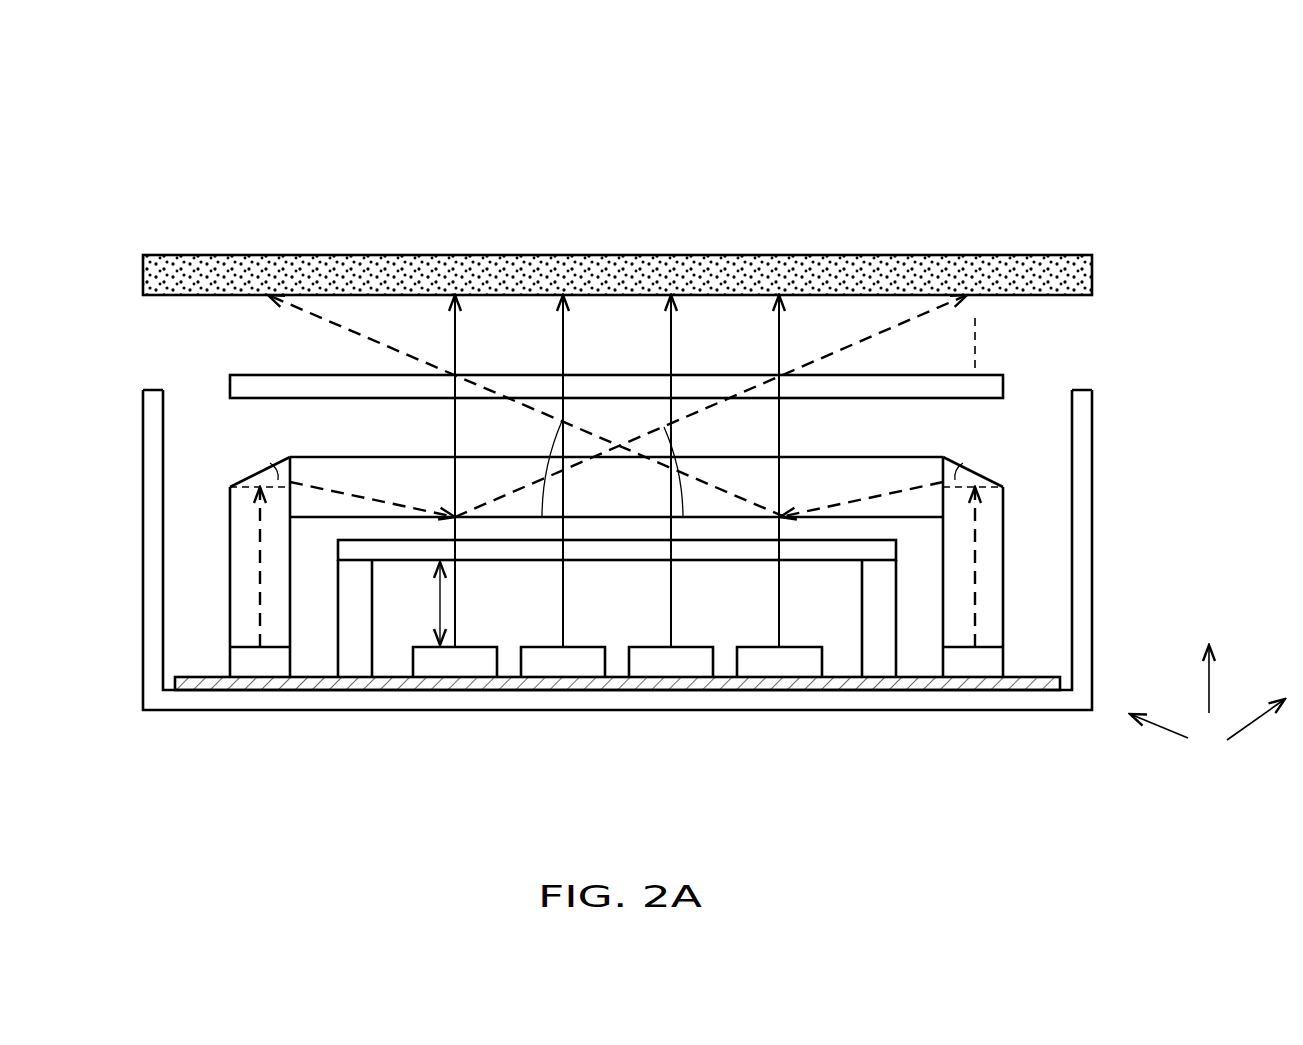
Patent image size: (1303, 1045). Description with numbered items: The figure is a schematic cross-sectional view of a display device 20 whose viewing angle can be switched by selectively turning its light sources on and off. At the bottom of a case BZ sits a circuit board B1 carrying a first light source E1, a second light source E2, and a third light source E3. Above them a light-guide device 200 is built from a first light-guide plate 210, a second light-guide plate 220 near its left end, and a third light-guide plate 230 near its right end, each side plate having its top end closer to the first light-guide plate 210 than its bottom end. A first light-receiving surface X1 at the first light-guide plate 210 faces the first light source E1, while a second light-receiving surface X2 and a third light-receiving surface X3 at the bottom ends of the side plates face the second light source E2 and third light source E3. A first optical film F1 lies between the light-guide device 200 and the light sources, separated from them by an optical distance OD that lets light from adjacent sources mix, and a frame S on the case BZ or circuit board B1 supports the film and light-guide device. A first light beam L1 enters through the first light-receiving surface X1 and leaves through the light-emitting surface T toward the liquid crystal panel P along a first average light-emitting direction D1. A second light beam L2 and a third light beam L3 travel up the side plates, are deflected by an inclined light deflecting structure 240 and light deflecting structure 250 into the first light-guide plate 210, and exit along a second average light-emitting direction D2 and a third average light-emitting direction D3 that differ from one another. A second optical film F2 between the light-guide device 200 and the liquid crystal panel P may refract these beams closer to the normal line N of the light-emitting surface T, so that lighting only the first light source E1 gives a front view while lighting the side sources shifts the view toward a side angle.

The display device 20 is at (1162, 822).
The light-guide device 200 is at (1238, 68).
The first light-guide plate 210 is at (885, 473).
The second light-guide plate 220 is at (243, 618).
The third light-guide plate 230 is at (990, 617).
The light deflecting structure 240 is at (243, 480).
The light deflecting structure 250 is at (988, 476).
The liquid crystal panel P is at (170, 273).
The second optical film F2 is at (230, 385).
The first optical film F1 is at (360, 552).
The case BZ is at (1080, 553).
The circuit board B1 is at (685, 683).
The frame S is at (355, 663).
The first light source E1 is at (590, 663).
The second light source E2 is at (276, 663).
The third light source E3 is at (958, 663).
The first light beam L1 is at (456, 617).
The second light beam L2 is at (868, 333).
The third light beam L3 is at (312, 316).
The light-emitting surface T is at (351, 455).
The normal line N is at (980, 346).
The optical distance OD is at (422, 603).
The first light-receiving surface X1 is at (392, 520).
The second light-receiving surface X2 is at (247, 650).
The third light-receiving surface X3 is at (988, 650).
The first average light-emitting direction D1 is at (1228, 679).
The second average light-emitting direction D2 is at (1261, 726).
The third average light-emitting direction D3 is at (1159, 739).